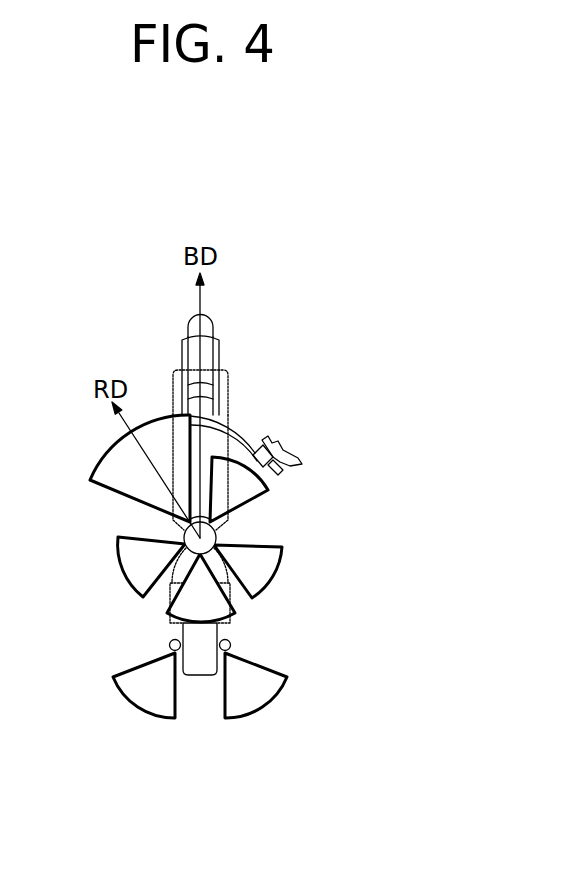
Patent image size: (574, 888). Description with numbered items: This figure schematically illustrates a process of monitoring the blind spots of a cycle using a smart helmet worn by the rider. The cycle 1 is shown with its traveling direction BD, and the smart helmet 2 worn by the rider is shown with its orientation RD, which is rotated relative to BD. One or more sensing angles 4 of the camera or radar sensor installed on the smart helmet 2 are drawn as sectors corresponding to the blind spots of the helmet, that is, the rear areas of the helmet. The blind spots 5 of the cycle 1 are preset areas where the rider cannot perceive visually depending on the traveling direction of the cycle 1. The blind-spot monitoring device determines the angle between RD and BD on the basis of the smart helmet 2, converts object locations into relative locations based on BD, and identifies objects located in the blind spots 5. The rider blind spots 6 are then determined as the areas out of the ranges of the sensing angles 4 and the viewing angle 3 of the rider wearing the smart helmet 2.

The cycle 1 is at (237, 428).
The smart helmet 2 is at (217, 545).
The viewing angle 3 is at (107, 448).
The sensing angles 4 is at (273, 582).
The blind spots of the cycle 5 is at (137, 708).
The rider blind spots 6 is at (267, 493).